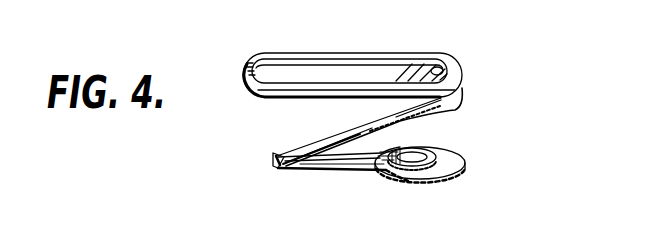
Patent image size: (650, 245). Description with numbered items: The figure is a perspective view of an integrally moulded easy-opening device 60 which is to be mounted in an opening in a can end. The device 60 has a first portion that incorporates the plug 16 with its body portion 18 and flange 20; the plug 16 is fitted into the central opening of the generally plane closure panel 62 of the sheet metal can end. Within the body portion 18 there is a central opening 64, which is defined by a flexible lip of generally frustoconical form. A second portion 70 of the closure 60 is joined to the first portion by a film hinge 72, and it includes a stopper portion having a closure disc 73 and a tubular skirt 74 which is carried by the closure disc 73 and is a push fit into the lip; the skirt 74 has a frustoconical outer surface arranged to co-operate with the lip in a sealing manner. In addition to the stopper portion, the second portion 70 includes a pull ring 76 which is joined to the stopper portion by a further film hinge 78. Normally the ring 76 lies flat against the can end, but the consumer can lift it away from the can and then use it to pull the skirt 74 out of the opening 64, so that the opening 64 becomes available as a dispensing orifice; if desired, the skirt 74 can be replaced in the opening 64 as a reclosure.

The plug 16 is at (458, 186).
The body portion 18 is at (396, 183).
The flange 20 is at (464, 163).
The easy-opening device 60 is at (262, 170).
The closure panel 62 is at (323, 164).
The central opening 64 is at (441, 149).
The second portion 70 is at (300, 143).
The film hinge 72 is at (272, 157).
The closure disc 73 is at (407, 80).
The tubular skirt 74 is at (430, 118).
The pull ring 76 is at (250, 56).
The film hinge 78 is at (434, 63).